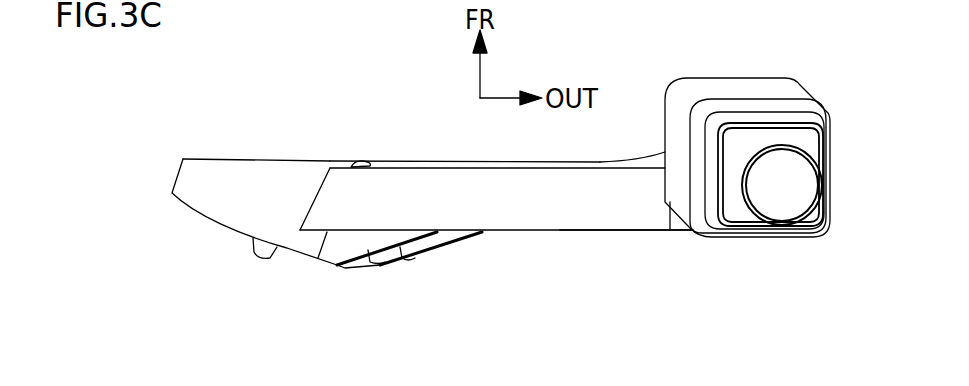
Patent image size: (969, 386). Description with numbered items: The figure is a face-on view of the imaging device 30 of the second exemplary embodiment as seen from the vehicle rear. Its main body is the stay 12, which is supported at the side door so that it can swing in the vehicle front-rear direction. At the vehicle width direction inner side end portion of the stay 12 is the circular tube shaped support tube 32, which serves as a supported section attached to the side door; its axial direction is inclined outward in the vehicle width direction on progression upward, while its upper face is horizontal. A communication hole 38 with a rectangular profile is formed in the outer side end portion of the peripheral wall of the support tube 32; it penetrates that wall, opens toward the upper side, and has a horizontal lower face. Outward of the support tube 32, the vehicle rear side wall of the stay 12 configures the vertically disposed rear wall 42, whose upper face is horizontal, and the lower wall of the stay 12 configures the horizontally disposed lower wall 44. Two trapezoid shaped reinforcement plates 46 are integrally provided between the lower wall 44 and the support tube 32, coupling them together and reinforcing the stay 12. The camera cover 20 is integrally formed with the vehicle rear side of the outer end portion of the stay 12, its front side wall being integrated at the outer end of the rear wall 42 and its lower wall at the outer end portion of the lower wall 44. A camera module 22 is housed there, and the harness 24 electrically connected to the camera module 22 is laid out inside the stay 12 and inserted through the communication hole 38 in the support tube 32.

The stay 12 is at (533, 232).
The camera cover 20 is at (718, 78).
The camera module 22 is at (743, 235).
The harness 24 is at (655, 155).
The imaging device 30 is at (397, 110).
The support tube 32 is at (240, 167).
The communication hole 38 is at (353, 160).
The rear wall 42 is at (442, 177).
The lower wall 44 is at (620, 230).
The reinforcement plates 46 is at (398, 248).